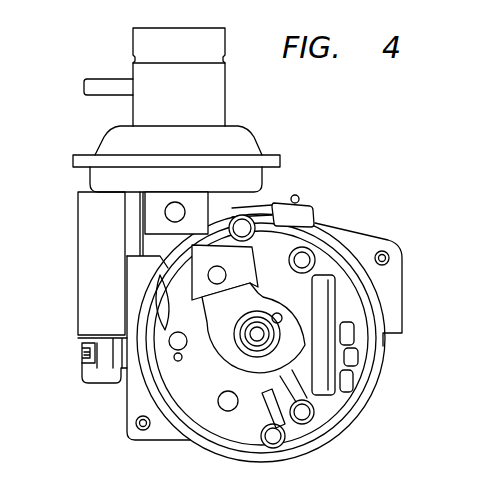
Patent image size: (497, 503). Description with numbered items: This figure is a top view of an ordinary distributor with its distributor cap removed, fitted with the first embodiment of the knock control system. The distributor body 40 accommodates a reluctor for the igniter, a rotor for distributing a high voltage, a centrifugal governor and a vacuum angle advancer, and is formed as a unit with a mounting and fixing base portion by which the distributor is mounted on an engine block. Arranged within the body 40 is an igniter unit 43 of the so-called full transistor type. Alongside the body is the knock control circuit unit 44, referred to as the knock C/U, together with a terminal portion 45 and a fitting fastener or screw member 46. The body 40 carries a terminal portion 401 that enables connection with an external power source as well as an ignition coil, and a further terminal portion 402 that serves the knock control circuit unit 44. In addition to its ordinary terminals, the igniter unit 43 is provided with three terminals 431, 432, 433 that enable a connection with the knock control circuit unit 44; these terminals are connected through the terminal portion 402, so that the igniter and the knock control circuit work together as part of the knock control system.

The distributor body 40 is at (197, 443).
The terminal portion 401 is at (313, 213).
The terminal portion 402 is at (135, 304).
The igniter unit 43 is at (338, 398).
The terminal 431 is at (346, 333).
The terminal 432 is at (353, 354).
The terminal 433 is at (346, 379).
The knock control circuit unit 44 is at (78, 271).
The terminal portion 45 is at (100, 384).
The fitting fastener or screw member 46 is at (82, 358).